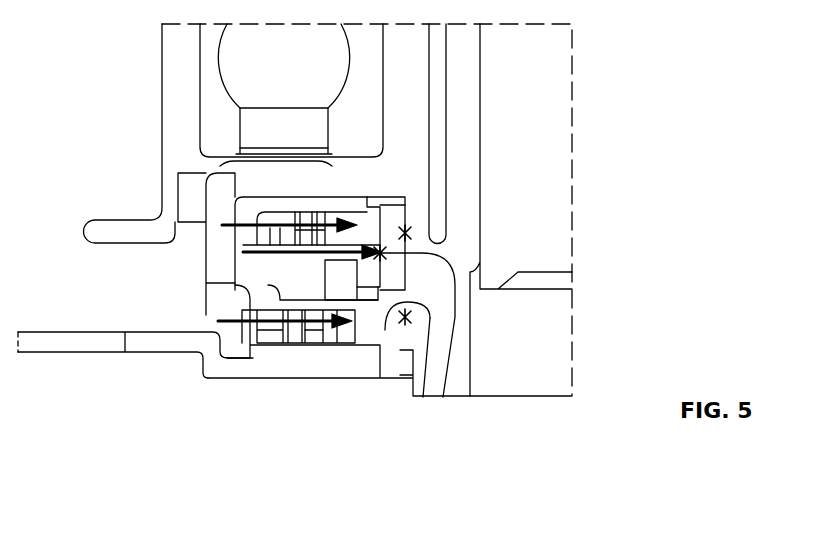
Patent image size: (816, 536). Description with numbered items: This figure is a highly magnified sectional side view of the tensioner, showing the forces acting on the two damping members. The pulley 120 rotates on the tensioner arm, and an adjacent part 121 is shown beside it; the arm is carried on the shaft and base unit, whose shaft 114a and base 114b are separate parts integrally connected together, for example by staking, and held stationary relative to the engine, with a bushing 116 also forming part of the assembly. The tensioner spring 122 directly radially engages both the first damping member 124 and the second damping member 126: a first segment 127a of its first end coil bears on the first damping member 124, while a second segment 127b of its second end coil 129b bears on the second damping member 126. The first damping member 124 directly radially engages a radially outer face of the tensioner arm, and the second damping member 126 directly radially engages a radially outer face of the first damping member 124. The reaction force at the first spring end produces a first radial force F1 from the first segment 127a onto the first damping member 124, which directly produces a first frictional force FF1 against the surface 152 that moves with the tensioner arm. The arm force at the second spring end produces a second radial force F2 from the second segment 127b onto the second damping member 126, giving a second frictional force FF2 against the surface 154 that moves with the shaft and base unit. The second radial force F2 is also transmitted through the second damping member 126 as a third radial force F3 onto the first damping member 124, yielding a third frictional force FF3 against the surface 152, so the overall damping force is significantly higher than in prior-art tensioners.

The pulley 120 is at (168, 57).
The light source 121 is at (213, 97).
The second damping member 126 is at (247, 205).
The second segment 127b is at (345, 213).
The second end coil 129b is at (275, 236).
The tensioner spring 122 is at (327, 270).
The first damping member 124 is at (260, 347).
The first segment 127a is at (337, 332).
The base 114b is at (148, 345).
The shaft 114a is at (463, 360).
The bushing 116 is at (440, 77).
The first radial force F1 is at (222, 318).
The second radial force F2 is at (250, 260).
The third radial force F3 is at (222, 223).
The first amount of frictional force FF1 is at (423, 397).
The second amount of frictional force FF2 is at (443, 397).
The third amount of frictional force FF3 is at (405, 233).
The surface that moves with the tensioner arm 152 is at (385, 330).
The surface that moves with the shaft and base unit 154 is at (373, 240).